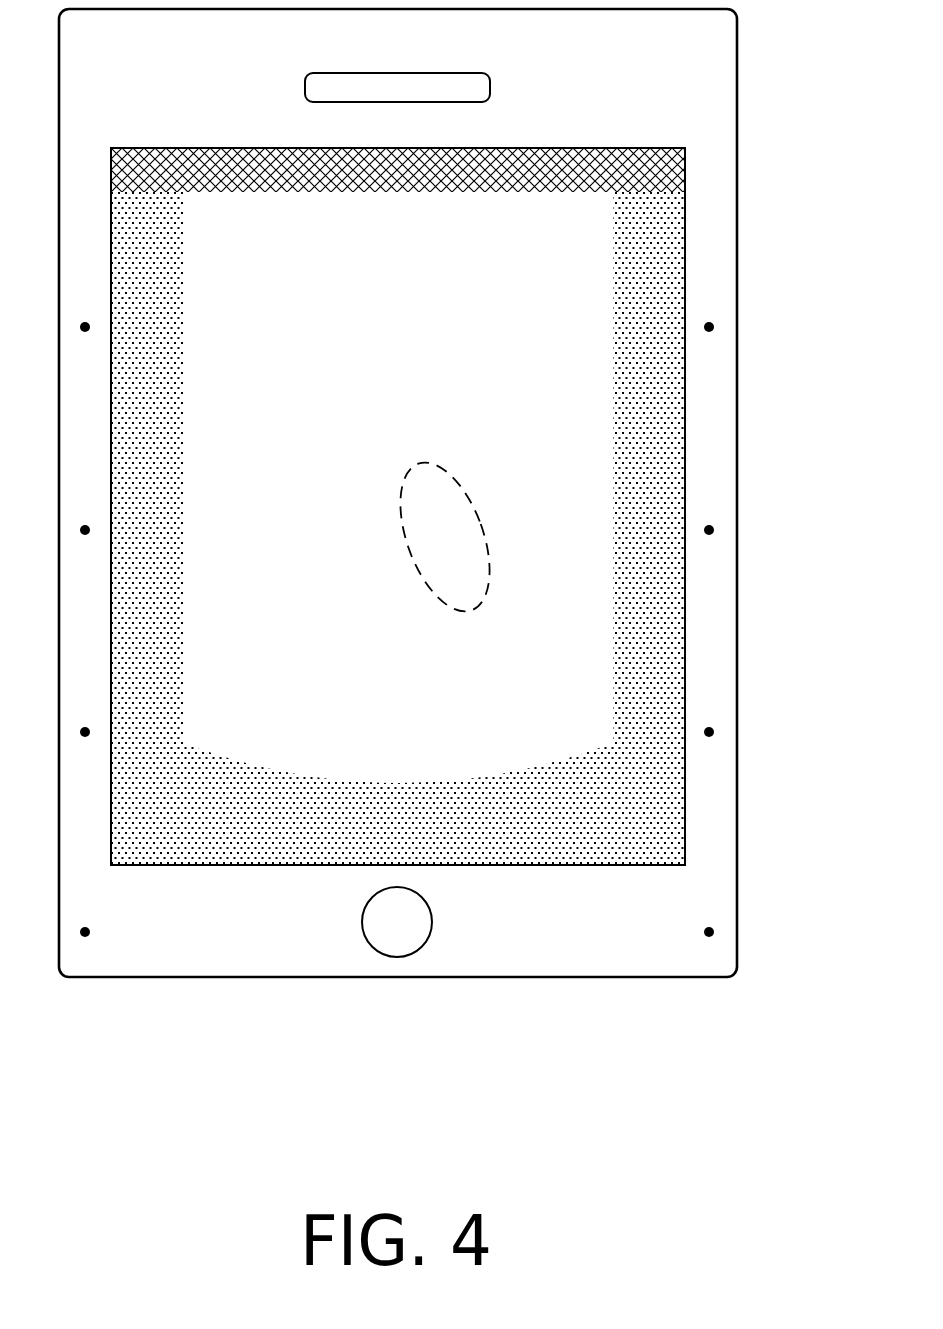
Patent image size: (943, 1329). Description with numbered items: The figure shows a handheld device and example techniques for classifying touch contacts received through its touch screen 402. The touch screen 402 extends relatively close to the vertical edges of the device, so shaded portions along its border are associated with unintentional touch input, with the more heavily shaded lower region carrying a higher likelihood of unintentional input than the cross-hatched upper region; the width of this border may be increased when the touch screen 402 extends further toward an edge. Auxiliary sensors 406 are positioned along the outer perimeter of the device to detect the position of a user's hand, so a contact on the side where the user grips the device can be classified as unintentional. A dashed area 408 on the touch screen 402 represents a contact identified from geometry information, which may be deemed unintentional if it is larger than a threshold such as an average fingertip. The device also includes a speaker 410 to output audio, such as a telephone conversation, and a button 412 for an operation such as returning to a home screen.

The touch screen 402 is at (537, 148).
The auxiliary sensors 406 is at (712, 325).
The area 408 is at (433, 465).
The speaker 410 is at (396, 73).
The button 412 is at (431, 921).